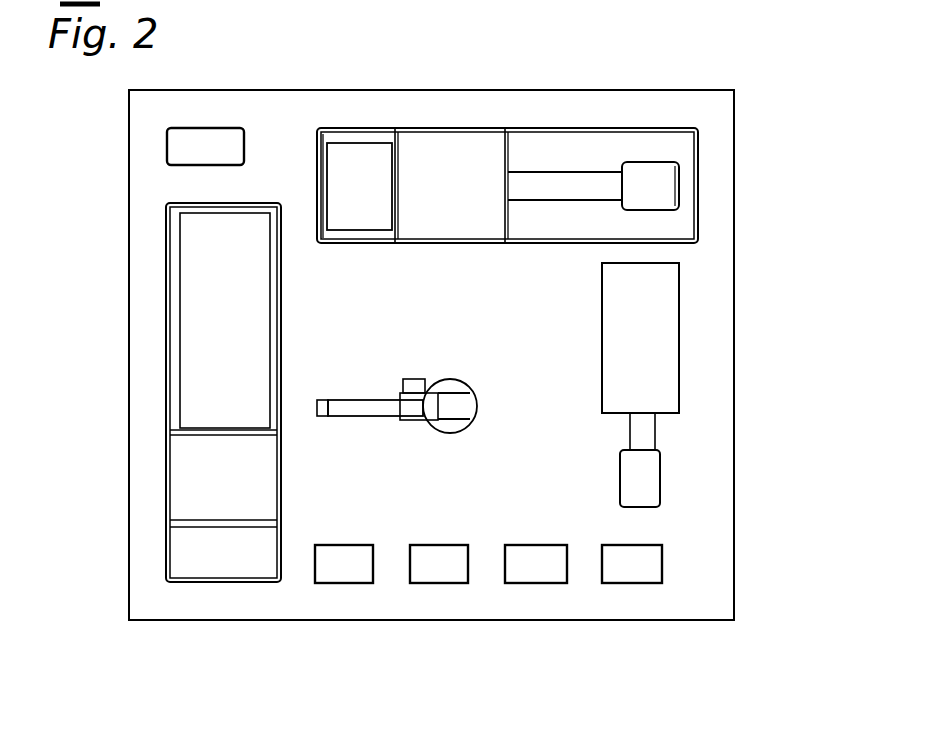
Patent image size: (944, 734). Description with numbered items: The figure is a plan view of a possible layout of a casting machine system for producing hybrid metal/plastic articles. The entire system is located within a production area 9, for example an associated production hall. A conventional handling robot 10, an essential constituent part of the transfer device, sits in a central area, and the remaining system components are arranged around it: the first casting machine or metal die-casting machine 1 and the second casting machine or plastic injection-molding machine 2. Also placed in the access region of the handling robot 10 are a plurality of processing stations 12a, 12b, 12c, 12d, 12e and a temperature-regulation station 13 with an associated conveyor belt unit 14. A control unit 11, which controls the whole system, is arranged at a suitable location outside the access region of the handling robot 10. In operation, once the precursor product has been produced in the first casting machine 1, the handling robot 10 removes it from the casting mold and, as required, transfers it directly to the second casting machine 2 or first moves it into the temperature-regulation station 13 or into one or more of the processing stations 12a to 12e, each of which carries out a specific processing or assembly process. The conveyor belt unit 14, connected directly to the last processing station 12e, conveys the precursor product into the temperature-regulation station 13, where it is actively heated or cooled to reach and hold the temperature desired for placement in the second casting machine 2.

The first casting machine 1 is at (201, 357).
The second casting machine 2 is at (552, 147).
The production area 9 is at (736, 146).
The handling robot 10 is at (445, 396).
The control unit 11 is at (202, 141).
The processing station 12a is at (348, 562).
The processing station 12b is at (438, 563).
The processing station 12c is at (528, 562).
The processing station 12d is at (635, 583).
The last processing station 12e is at (660, 490).
The temperature-regulation station 13 is at (667, 310).
The conveyor belt unit 14 is at (655, 423).